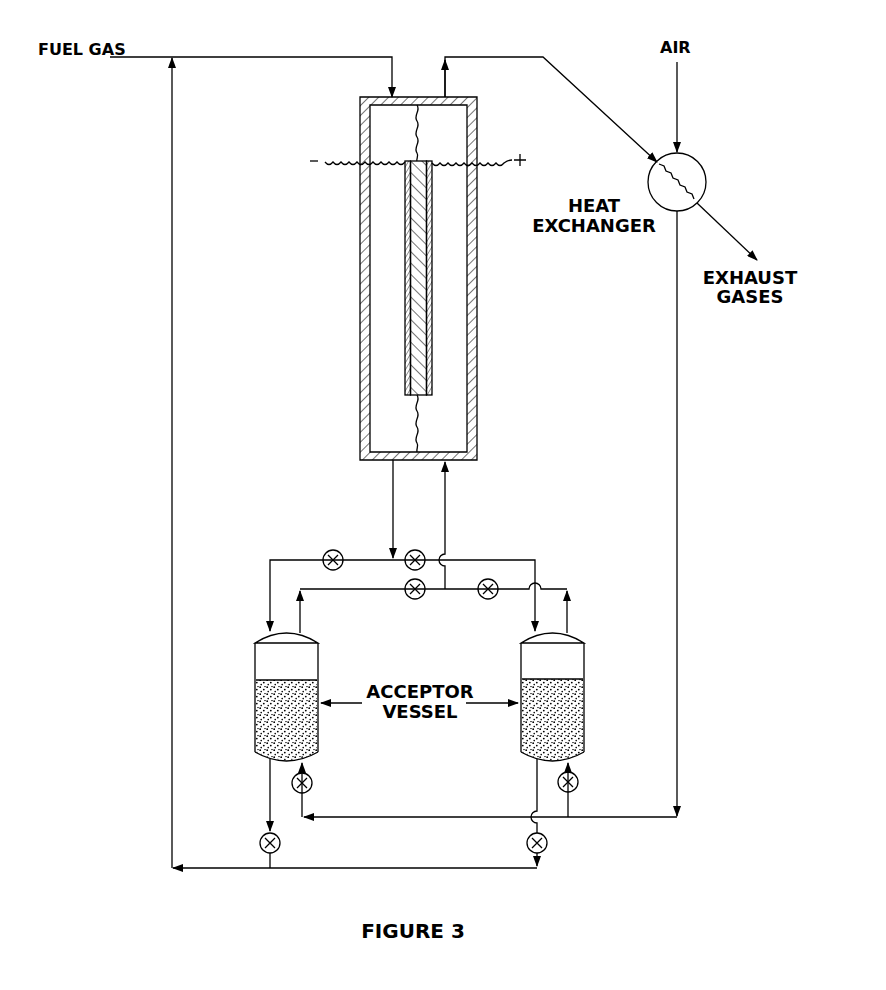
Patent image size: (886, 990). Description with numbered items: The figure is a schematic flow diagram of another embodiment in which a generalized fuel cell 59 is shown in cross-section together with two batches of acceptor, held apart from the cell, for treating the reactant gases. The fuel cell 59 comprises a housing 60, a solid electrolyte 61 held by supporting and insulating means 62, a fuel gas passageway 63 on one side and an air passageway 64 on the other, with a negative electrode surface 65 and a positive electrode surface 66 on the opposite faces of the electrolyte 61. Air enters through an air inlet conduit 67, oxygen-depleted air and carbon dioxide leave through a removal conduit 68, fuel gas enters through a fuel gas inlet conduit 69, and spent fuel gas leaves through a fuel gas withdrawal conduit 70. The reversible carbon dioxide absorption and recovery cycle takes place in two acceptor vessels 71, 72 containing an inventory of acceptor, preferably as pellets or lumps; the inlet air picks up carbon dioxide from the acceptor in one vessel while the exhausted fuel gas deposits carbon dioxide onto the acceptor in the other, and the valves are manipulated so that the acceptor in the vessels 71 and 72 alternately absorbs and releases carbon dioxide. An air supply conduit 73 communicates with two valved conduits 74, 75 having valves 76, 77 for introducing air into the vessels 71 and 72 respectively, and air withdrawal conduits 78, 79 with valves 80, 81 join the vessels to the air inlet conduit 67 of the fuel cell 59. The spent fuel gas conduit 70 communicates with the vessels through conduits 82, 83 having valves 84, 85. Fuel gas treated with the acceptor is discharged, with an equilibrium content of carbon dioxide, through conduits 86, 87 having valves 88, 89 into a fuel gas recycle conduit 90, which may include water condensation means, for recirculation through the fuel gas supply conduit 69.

The fuel cell 59 is at (422, 278).
The housing 60 is at (477, 207).
The solid electrolyte 61 is at (419, 339).
The supporting and insulating means 62 is at (420, 131).
The fuel gas passageway 63 is at (400, 279).
The air passageway 64 is at (462, 279).
The negative electrode surface 65 is at (405, 312).
The positive electrode surface 66 is at (432, 312).
The air inlet conduit 67 is at (446, 516).
The removal conduit 68 is at (476, 57).
The fuel gas inlet conduit 69 is at (318, 57).
The fuel gas withdrawal conduit 70 is at (393, 509).
The acceptor vessel 71 is at (256, 660).
The acceptor vessel 72 is at (585, 664).
The air supply conduit 73 is at (677, 92).
The valved conduit 74 is at (303, 768).
The valved conduit 75 is at (572, 768).
The valve 76 is at (313, 786).
The valve 77 is at (579, 786).
The air withdrawal conduit 78 is at (357, 590).
The air withdrawal conduit 79 is at (569, 607).
The valve 80 is at (416, 599).
The valve 81 is at (488, 599).
The conduit 82 is at (287, 559).
The conduit 83 is at (510, 559).
The valve 84 is at (334, 550).
The valve 85 is at (415, 550).
The conduit 86 is at (268, 793).
The conduit 87 is at (535, 792).
The valve 88 is at (260, 843).
The valve 89 is at (526, 843).
The fuel gas recycle conduit 90 is at (172, 843).